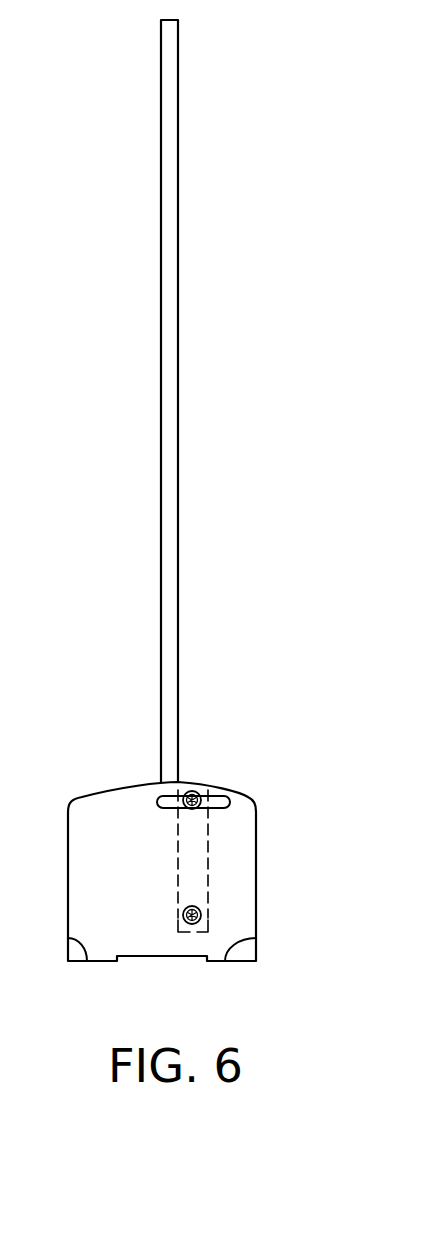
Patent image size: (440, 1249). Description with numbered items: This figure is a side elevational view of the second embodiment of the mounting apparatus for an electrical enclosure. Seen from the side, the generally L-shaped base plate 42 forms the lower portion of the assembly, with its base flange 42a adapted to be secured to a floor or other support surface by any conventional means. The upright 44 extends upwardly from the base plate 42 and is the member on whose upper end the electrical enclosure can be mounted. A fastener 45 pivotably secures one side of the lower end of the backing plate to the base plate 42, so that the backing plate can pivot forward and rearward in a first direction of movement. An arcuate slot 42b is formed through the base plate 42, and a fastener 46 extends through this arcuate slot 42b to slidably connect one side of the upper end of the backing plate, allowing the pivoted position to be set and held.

The base plate 42 is at (97, 880).
The base flange 42a is at (70, 938).
The arcuate slot 42b is at (218, 805).
The upright 44 is at (170, 269).
The fastener 45 is at (201, 912).
The fastener 46 is at (193, 790).